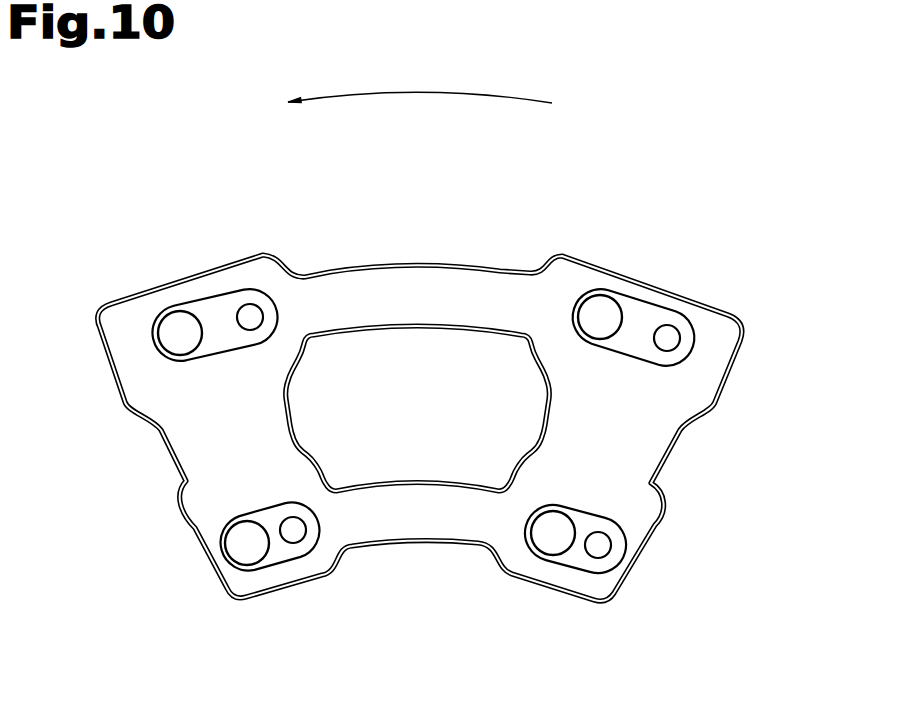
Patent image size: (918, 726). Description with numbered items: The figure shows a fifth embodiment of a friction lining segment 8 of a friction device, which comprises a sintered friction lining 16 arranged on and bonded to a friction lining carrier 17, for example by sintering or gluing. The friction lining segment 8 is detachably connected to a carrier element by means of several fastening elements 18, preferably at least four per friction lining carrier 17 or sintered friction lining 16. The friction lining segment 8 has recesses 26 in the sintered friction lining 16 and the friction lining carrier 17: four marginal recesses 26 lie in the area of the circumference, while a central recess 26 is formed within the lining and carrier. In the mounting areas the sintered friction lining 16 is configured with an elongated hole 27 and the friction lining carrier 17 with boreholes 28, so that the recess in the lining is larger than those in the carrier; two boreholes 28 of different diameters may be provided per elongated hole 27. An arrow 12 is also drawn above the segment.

The friction lining segment 8 is at (750, 217).
The direction of rotation 12 is at (420, 92).
The sintered friction lining 16 is at (648, 395).
The friction lining carrier 17 is at (611, 259).
The fastening element 18 is at (593, 312).
The recess 26 is at (210, 302).
The elongated hole 27 is at (267, 513).
The borehole 28 is at (235, 553).